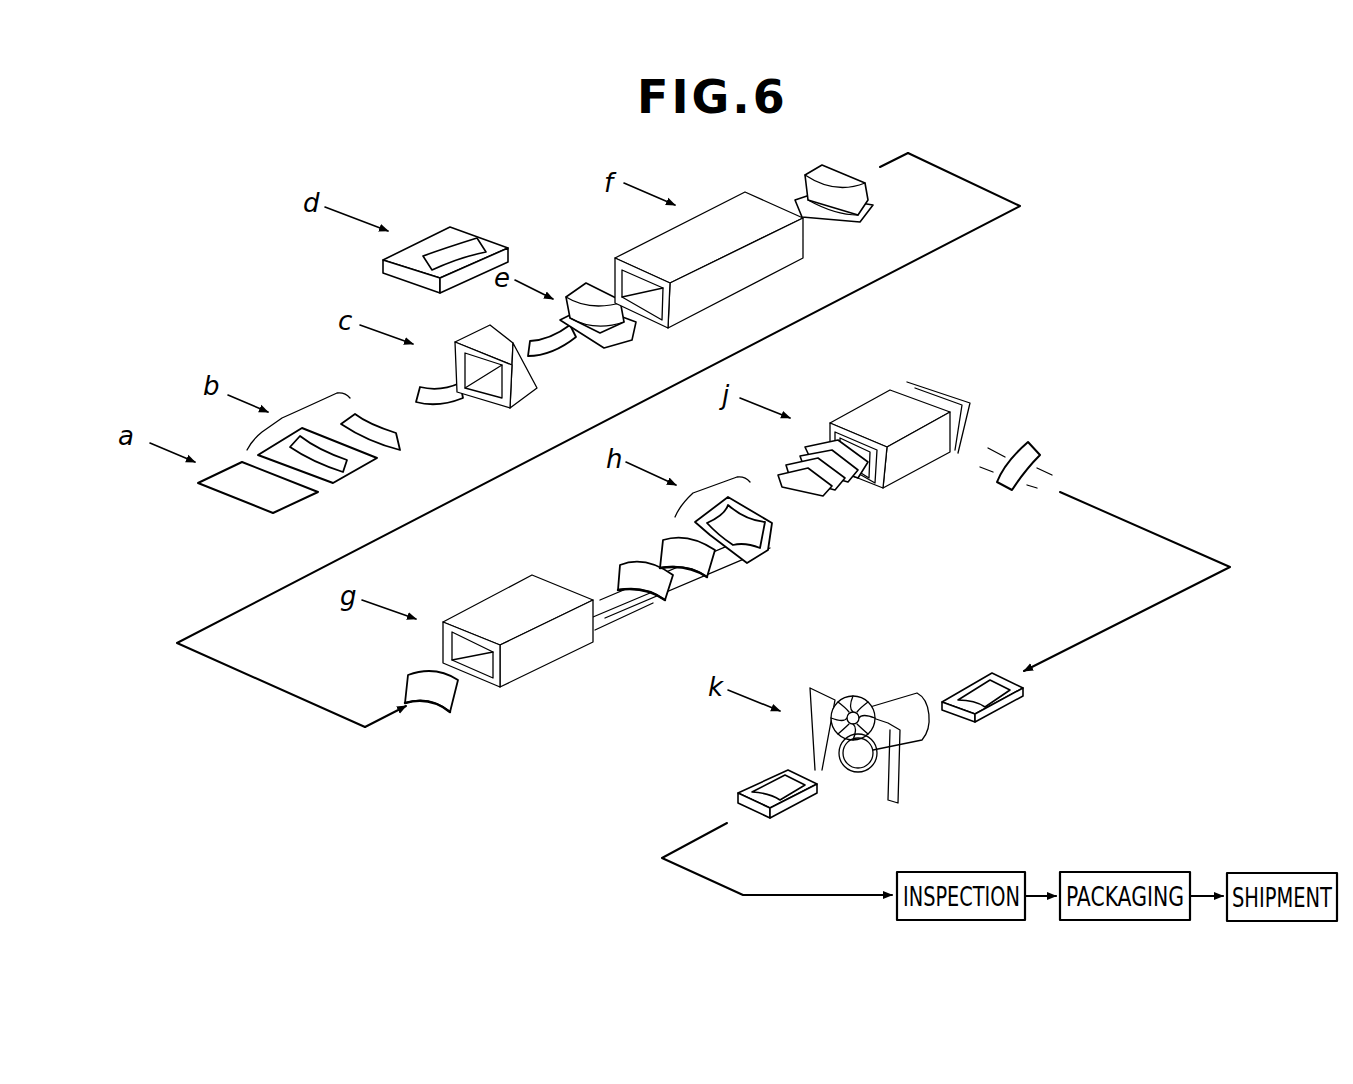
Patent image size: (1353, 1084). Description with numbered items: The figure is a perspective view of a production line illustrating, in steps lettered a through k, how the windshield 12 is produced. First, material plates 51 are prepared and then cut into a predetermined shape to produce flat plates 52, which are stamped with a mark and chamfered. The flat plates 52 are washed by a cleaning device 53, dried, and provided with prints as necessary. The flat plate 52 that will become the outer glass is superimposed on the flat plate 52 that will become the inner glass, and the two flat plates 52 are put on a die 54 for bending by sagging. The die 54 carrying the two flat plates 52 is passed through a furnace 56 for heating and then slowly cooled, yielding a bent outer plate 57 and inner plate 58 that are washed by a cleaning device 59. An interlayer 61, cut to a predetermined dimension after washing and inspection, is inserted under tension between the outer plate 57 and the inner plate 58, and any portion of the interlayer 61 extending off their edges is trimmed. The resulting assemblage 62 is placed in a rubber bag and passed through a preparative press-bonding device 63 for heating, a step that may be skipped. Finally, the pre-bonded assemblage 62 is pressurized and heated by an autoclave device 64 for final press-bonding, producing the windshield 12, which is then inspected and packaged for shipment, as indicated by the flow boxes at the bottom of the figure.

The windshield 12 is at (763, 777).
The material plate 51 is at (234, 499).
The flat plate 52 is at (397, 440).
The cleaning device 53 is at (530, 403).
The die 54 is at (605, 323).
The furnace 56 is at (740, 288).
The bent outer plate 57 is at (660, 597).
The inner plate 58 is at (710, 572).
The cleaning device 59 is at (547, 667).
The interlayer 61 is at (778, 542).
The assemblage 62 is at (1030, 442).
The preparative press-bonding device 63 is at (915, 478).
The autoclave device 64 is at (907, 752).